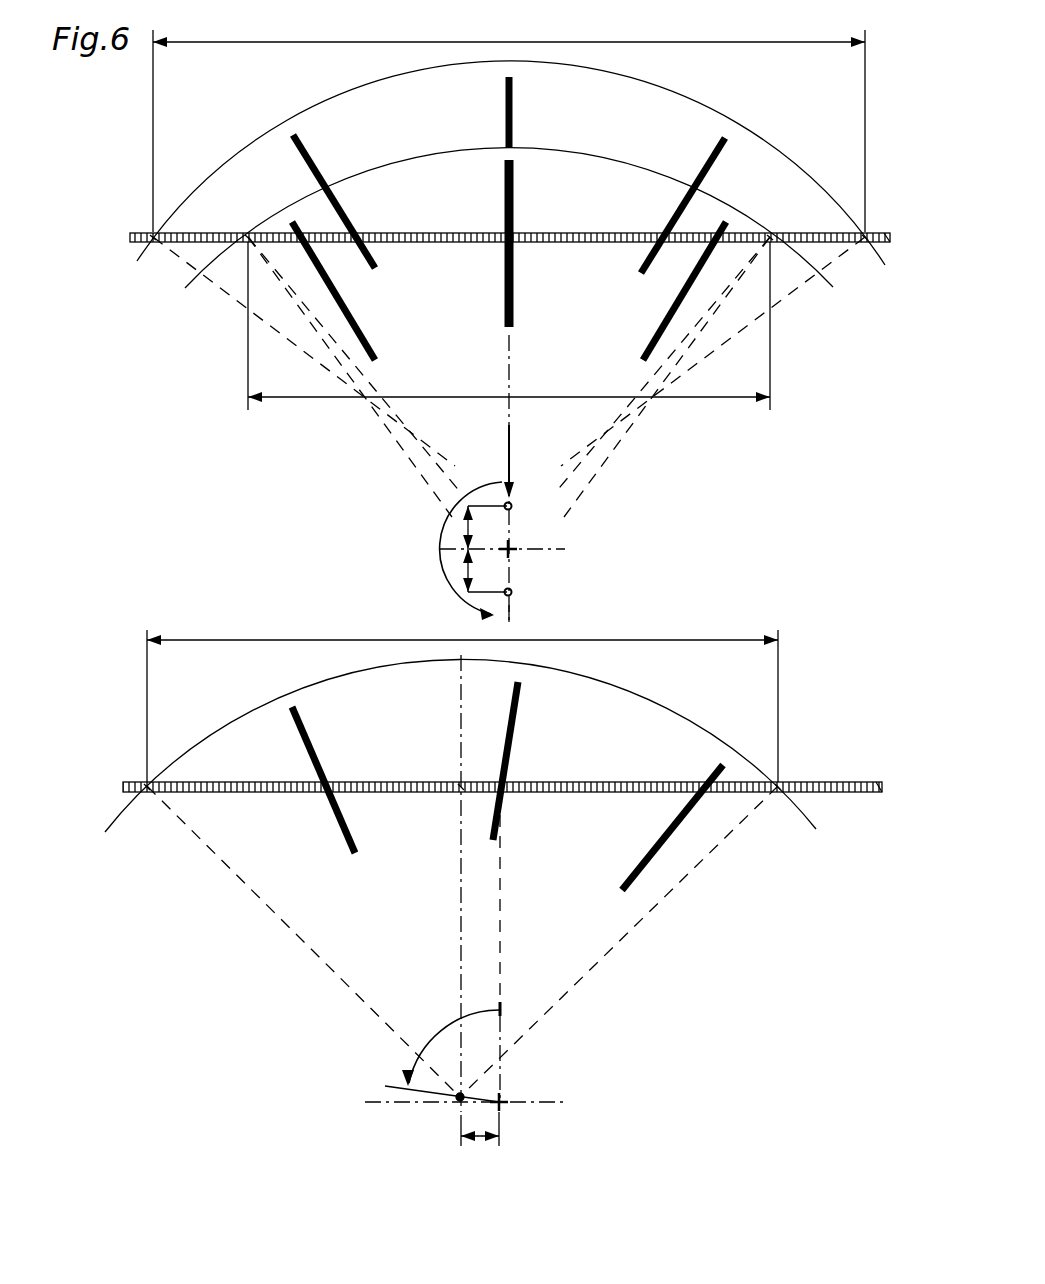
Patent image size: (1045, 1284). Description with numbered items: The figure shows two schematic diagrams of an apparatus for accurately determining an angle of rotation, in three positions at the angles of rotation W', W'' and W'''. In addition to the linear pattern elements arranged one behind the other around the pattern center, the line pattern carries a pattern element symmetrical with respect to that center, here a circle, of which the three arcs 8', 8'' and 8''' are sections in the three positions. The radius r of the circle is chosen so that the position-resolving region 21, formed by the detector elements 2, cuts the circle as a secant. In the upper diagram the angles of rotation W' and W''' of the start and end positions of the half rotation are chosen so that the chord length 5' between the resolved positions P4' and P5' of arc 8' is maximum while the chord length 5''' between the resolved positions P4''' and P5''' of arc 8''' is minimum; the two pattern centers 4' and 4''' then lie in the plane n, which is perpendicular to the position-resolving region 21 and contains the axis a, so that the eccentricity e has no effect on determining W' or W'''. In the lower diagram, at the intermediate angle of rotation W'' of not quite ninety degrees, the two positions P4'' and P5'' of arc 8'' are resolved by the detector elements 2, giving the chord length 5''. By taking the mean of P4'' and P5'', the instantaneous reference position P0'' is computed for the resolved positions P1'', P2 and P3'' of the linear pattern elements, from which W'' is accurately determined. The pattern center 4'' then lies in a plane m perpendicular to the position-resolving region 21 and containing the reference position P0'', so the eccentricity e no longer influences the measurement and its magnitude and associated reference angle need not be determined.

The detector elements 2 is at (878, 782).
The position-resolving region 21 is at (897, 243).
The arc 8' is at (511, 163).
The arc 8'' is at (460, 745).
The arc 8''' is at (509, 201).
The pattern center 4' is at (533, 487).
The pattern center 4'' is at (437, 1120).
The pattern center 4''' is at (548, 575).
The axis a is at (512, 548).
The eccentricity e is at (484, 826).
The radius r is at (277, 276).
The plane n is at (512, 347).
The plane m is at (458, 850).
The chord length 5' is at (509, 123).
The chord length 5'' is at (462, 698).
The chord length 5''' is at (509, 326).
The angle of rotation W' is at (525, 458).
The angle of rotation W'' is at (438, 1048).
The angle of rotation W''' is at (453, 552).
The reference position P0'' is at (442, 762).
The resolved position P1'' is at (307, 780).
The resolved position P2 is at (513, 780).
The resolved position P3'' is at (672, 812).
The resolved position P4' is at (130, 198).
The resolved position P4'' is at (127, 757).
The resolved position P4''' is at (264, 199).
The resolved position P5' is at (892, 204).
The resolved position P5'' is at (810, 760).
The resolved position P5''' is at (781, 207).